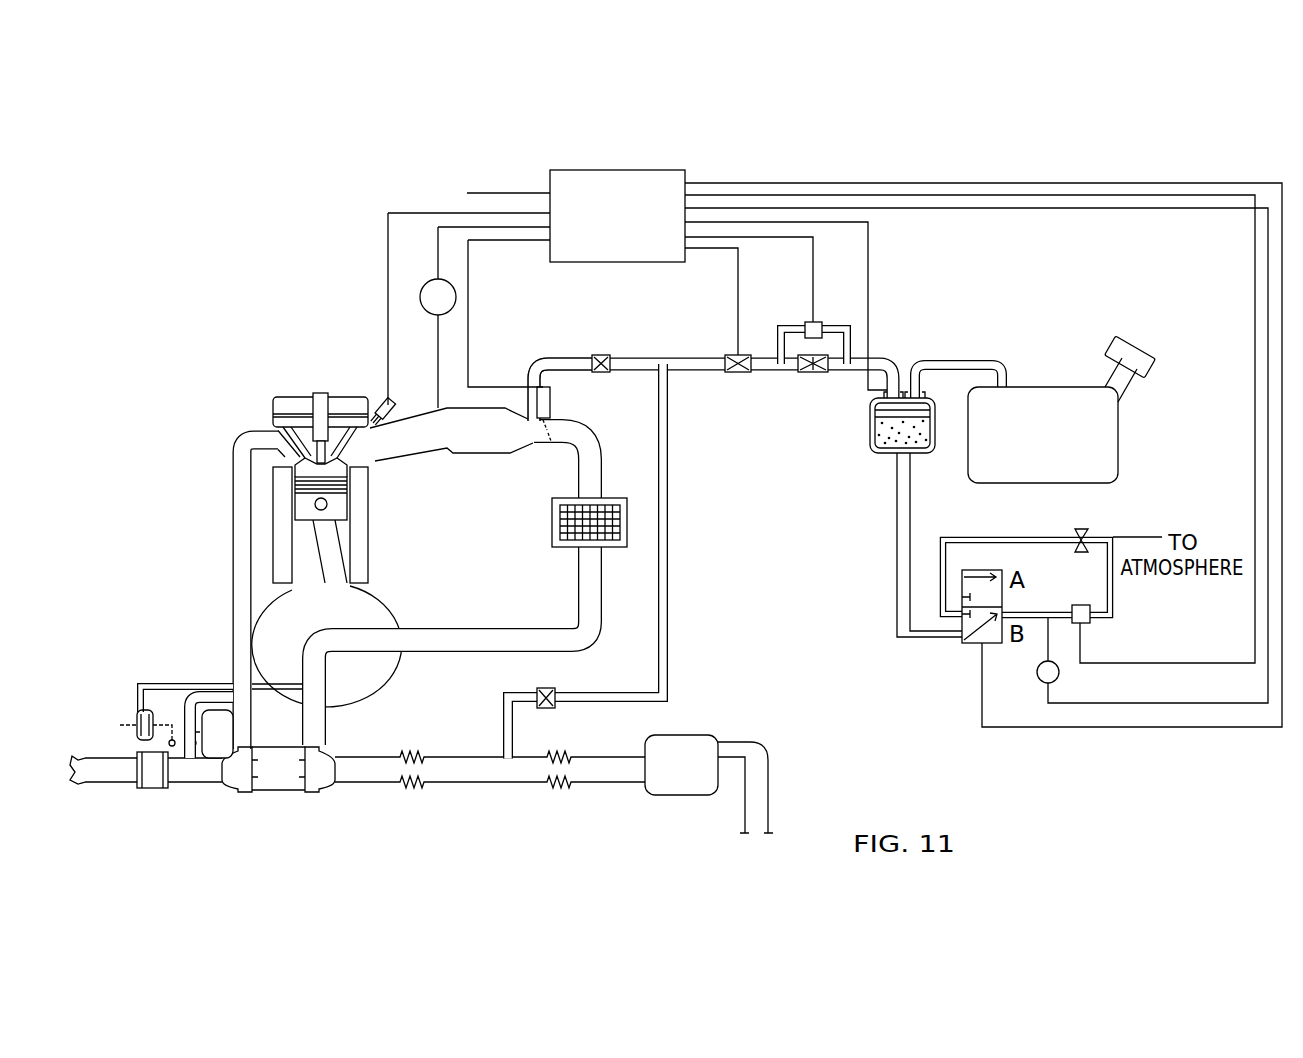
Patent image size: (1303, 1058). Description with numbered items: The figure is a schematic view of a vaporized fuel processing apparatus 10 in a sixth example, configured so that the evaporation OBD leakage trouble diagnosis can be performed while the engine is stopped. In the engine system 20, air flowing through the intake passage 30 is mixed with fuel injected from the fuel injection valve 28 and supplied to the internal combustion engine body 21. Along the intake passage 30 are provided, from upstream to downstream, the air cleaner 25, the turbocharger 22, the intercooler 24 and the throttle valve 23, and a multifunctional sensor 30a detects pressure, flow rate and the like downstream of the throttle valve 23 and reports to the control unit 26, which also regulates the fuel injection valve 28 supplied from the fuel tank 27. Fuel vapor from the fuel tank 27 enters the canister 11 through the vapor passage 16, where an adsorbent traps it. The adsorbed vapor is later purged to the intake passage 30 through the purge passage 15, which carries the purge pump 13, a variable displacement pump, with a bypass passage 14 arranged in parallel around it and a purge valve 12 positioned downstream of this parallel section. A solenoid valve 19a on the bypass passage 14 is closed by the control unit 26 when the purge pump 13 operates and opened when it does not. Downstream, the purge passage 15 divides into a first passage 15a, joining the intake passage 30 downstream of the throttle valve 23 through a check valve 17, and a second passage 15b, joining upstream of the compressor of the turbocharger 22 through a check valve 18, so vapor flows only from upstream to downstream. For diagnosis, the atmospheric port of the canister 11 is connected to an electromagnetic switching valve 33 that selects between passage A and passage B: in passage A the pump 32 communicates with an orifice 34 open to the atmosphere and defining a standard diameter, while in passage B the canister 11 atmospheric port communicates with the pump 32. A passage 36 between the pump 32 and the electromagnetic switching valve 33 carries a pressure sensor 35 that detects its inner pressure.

The vaporized fuel processing apparatus 10 is at (972, 281).
The canister 11 is at (915, 460).
The purge valve 12 is at (740, 355).
The purge pump 13 is at (818, 322).
The bypass passage 14 is at (795, 378).
The purge passage 15 is at (680, 357).
The first passage 15a is at (546, 357).
The second passage 15b is at (668, 596).
The vapor passage 16 is at (970, 360).
The check valve 17 is at (601, 355).
The check valve 18 is at (545, 688).
The solenoid valve 19a is at (815, 380).
The engine system 20 is at (319, 528).
The internal combustion engine body 21 is at (350, 397).
The turbocharger 22 is at (278, 795).
The throttle valve 23 is at (541, 425).
The intercooler 24 is at (627, 522).
The air cleaner 25 is at (680, 796).
The control unit 26 is at (632, 170).
The fuel tank 27 is at (1063, 387).
The fuel injection valve 28 is at (389, 395).
The intake passage 30 is at (603, 622).
The multifunctional sensor 30a is at (420, 297).
The pump 32 is at (1090, 623).
The electromagnetic switching valve 33 is at (962, 640).
The orifice 34 is at (1100, 532).
The pressure sensor 35 is at (1037, 678).
The passage 36 is at (1058, 610).